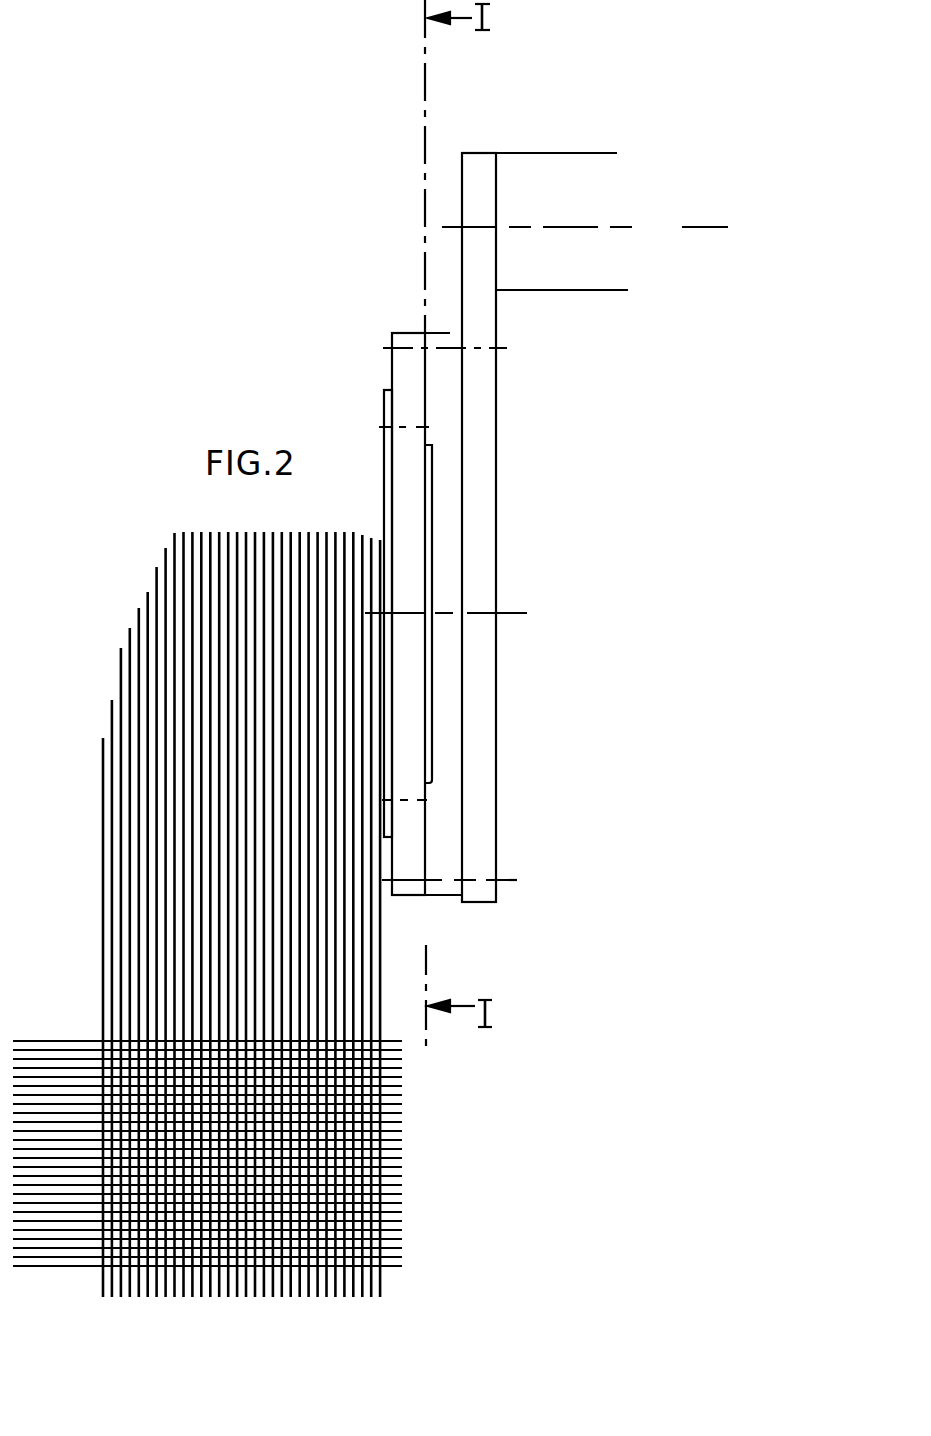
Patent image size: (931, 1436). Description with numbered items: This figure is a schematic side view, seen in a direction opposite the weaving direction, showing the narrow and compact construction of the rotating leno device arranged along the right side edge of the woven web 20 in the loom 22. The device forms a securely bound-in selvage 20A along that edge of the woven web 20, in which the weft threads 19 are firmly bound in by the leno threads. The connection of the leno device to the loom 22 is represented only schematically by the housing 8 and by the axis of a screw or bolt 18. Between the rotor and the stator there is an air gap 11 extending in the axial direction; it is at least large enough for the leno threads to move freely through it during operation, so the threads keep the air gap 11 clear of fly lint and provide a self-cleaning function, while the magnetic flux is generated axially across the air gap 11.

The housing 8 is at (475, 742).
The air gap 11 is at (430, 537).
The axis of a screw or bolt 18 is at (655, 228).
The weft threads 19 is at (213, 1040).
The woven web 20 is at (290, 1220).
The selvage 20A is at (382, 1200).
The loom 22 is at (604, 128).